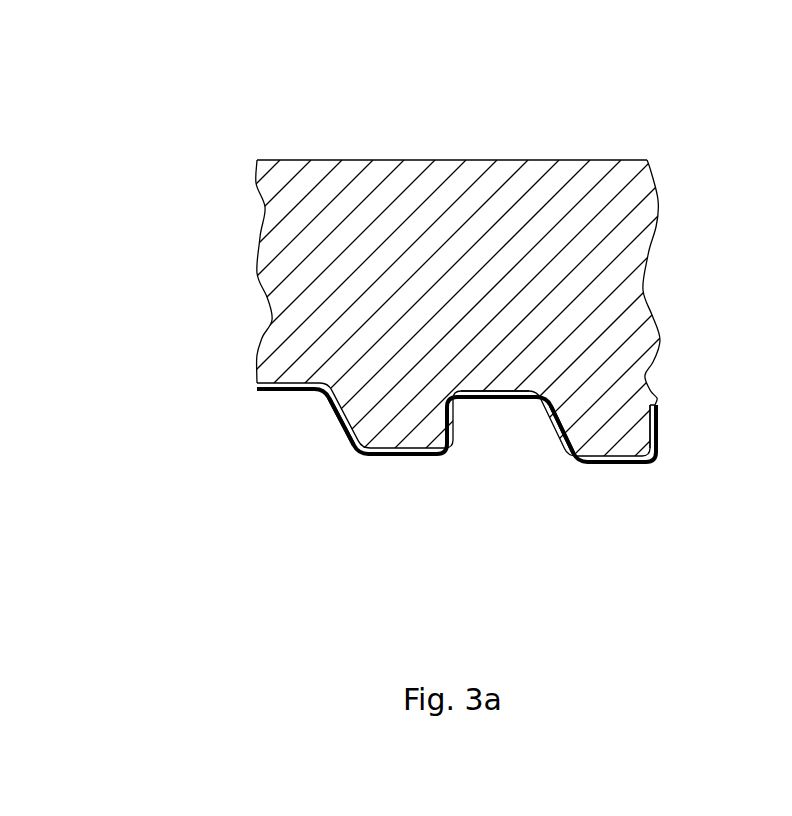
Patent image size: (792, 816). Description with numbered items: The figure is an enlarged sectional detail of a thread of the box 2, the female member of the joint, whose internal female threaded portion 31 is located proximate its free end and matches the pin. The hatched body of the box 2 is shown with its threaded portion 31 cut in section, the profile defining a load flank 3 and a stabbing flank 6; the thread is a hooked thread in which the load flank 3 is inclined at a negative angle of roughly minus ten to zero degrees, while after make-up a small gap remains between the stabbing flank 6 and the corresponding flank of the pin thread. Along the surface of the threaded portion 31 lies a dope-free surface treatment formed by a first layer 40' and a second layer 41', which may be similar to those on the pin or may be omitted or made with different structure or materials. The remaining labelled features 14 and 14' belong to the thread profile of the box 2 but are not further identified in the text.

The box 2 is at (300, 276).
The load flank 3 is at (455, 413).
The stabbing flank 6 is at (345, 419).
The groove 14 is at (387, 548).
The rib 14' is at (491, 232).
The internal female threaded portion 31 is at (606, 410).
The first layer 40' is at (724, 479).
The second layer 41' is at (402, 505).